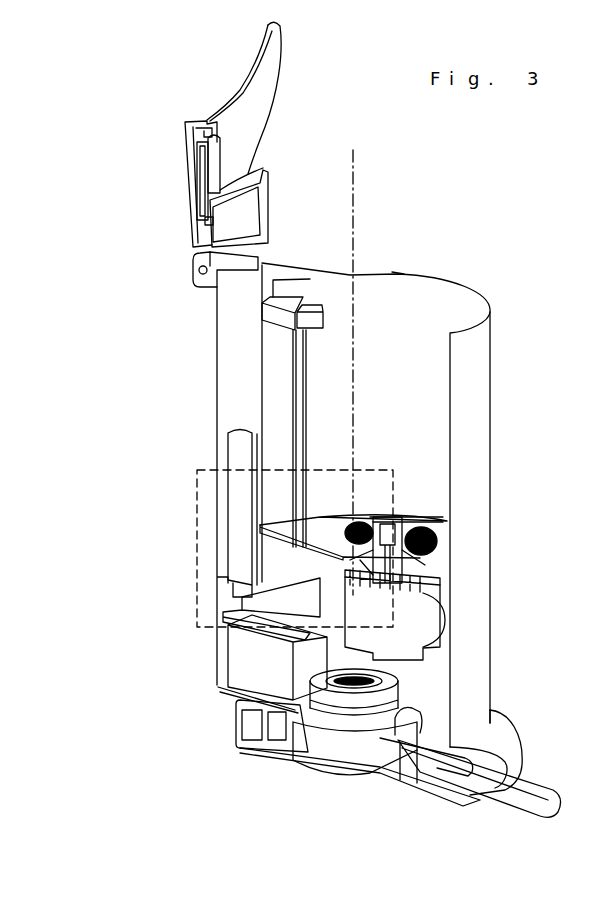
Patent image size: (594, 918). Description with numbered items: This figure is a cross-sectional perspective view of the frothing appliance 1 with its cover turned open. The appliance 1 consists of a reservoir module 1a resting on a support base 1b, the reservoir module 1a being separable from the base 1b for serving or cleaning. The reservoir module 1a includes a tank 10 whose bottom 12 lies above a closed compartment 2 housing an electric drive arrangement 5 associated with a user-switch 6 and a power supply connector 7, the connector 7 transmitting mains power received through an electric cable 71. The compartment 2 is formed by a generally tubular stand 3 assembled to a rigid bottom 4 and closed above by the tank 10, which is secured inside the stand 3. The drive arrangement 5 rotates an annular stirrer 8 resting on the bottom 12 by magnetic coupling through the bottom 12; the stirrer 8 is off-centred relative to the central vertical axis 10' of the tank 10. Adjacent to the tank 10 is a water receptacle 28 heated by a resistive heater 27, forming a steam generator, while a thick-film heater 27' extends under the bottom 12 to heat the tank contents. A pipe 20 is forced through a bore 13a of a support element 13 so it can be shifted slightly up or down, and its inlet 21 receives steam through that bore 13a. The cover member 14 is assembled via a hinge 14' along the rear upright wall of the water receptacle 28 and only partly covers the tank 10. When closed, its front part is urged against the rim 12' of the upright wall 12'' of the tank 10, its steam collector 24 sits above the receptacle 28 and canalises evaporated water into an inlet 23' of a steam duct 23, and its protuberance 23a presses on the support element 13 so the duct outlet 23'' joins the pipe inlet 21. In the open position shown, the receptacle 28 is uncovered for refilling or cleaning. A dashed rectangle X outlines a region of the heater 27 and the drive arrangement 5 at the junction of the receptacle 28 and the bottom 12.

The appliance 1 is at (438, 228).
The reservoir module 1a is at (160, 338).
The support base 1b is at (224, 772).
The compartment 2 is at (430, 677).
The tubular stand 3 is at (467, 563).
The rigid bottom 4 is at (433, 708).
The electric drive arrangement 5 is at (395, 615).
The user-switch 6 is at (237, 653).
The power supply connector 7 is at (314, 774).
The electric cable 71 is at (523, 803).
The stirrer 8 is at (413, 527).
The tank 10 is at (383, 505).
The central vertical axis 10' is at (381, 372).
The bottom 12 is at (353, 520).
The rim 12' is at (306, 256).
The upright wall 12'' is at (383, 260).
The support element 13 is at (312, 320).
The bore 13a is at (298, 308).
The cover member 14 is at (275, 97).
The hinge 14' is at (191, 270).
The pipe 20 is at (304, 413).
The inlet 21 is at (305, 340).
The steam duct 23 is at (166, 181).
The inlet 23' is at (169, 211).
The outlet 23'' is at (168, 133).
The protuberance 23a is at (215, 172).
The steam collector 24 is at (222, 227).
The heater 27 is at (197, 514).
The thick-film heater 27' is at (271, 597).
The water receptacle 28 is at (233, 395).
The detail region X is at (197, 503).